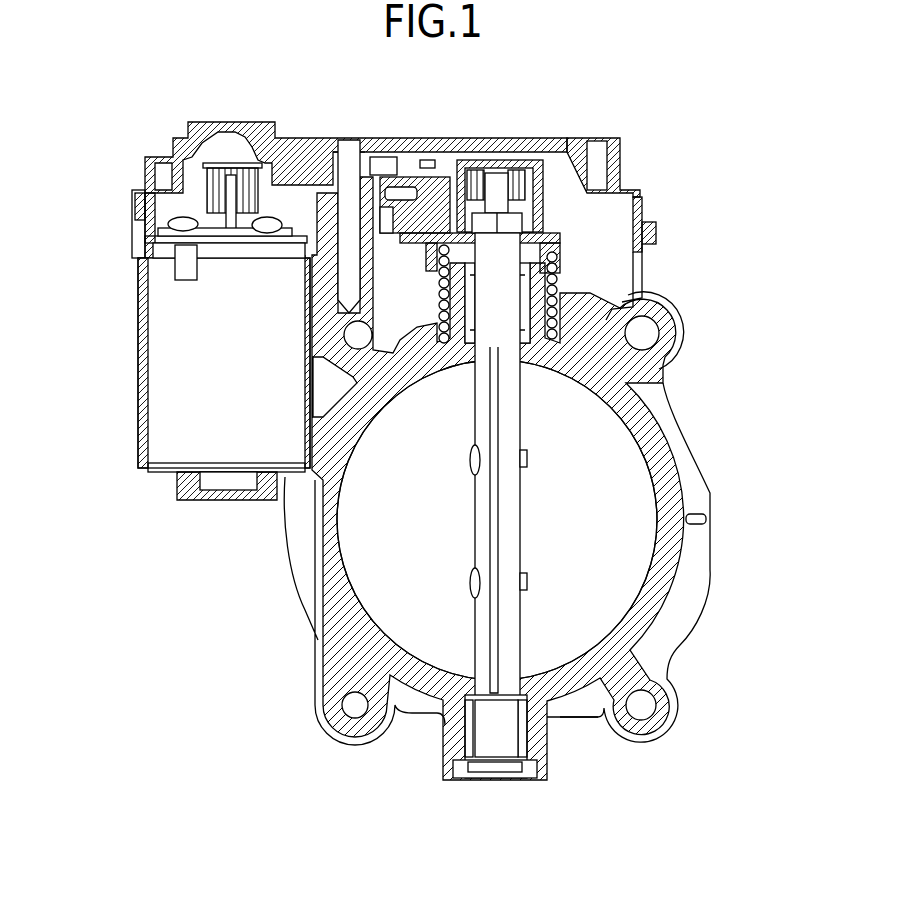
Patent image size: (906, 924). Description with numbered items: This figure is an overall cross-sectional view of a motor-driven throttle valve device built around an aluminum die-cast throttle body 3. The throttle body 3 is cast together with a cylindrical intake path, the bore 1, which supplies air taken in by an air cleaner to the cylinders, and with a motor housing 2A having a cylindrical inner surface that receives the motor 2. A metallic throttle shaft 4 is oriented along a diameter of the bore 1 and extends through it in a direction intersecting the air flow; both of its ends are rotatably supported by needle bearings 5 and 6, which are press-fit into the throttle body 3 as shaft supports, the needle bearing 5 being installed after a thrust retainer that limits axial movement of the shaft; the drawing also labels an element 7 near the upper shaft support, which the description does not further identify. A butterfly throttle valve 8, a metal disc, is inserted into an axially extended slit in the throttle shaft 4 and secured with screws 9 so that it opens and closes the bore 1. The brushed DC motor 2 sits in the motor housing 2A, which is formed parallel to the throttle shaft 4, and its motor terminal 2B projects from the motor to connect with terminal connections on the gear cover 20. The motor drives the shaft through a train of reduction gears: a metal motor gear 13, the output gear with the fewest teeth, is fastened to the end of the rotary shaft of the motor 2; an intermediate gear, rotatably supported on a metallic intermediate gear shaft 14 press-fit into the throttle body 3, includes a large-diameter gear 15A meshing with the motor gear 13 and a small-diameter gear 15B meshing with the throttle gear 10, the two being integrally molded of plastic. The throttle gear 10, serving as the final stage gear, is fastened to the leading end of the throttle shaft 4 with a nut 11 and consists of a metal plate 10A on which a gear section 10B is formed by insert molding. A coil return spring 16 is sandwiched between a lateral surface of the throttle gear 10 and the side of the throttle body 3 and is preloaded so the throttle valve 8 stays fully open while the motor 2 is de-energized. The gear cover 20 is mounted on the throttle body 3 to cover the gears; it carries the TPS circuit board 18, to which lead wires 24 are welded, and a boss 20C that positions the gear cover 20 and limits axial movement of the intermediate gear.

The bore 1 is at (590, 601).
The motor 2 is at (173, 387).
The motor housing 2A is at (187, 472).
The motor terminal 2B is at (147, 255).
The throttle body 3 is at (653, 583).
The throttle shaft 4 is at (503, 508).
The needle bearing 5 is at (548, 277).
The needle bearing 6 is at (658, 714).
The upper bearing 7 is at (490, 337).
The throttle valve 8 is at (496, 528).
The screws 9 is at (467, 467).
The throttle gear 10 is at (663, 238).
The metal plate 10A is at (512, 222).
The gear section 10B is at (395, 275).
The nut 11 is at (580, 207).
The motor gear 13 is at (228, 205).
The intermediate gear shaft 14 is at (350, 177).
The large-diameter gear 15A is at (228, 238).
The small-diameter gear 15B is at (320, 253).
The return spring 16 is at (663, 372).
The TPS circuit board 18 is at (527, 138).
The gear cover 20 is at (583, 138).
The boss 20C is at (352, 128).
The lead wires 24 is at (370, 172).